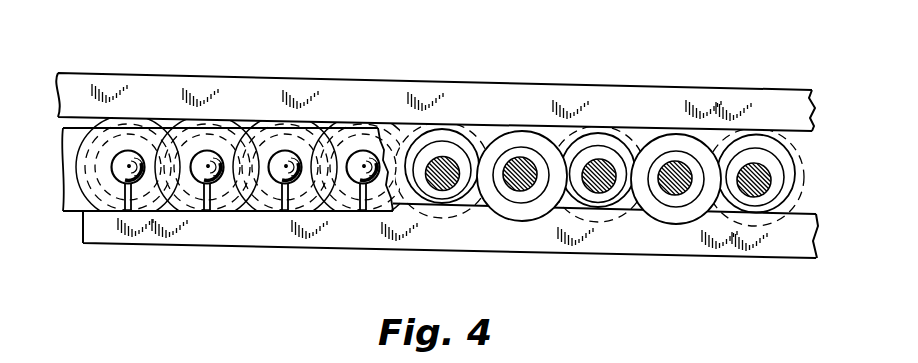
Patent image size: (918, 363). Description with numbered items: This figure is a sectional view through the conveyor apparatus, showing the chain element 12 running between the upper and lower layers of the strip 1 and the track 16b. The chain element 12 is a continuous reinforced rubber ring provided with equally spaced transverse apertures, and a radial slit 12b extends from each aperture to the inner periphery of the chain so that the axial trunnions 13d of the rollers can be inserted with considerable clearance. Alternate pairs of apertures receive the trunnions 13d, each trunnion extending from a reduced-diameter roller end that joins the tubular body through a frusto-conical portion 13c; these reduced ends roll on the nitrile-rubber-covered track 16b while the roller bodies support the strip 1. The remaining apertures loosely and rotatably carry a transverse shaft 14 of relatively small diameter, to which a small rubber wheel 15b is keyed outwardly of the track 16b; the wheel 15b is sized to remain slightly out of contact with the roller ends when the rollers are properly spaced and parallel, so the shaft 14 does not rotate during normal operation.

The strip 1 is at (427, 97).
The chain element 12 is at (249, 135).
The radial slit 12b is at (287, 213).
The frusto-conical portion 13c is at (593, 128).
The axial trunnion 13d is at (442, 190).
The transverse shaft 14 is at (519, 192).
The small wheel 15b is at (368, 127).
The track 16b is at (716, 249).